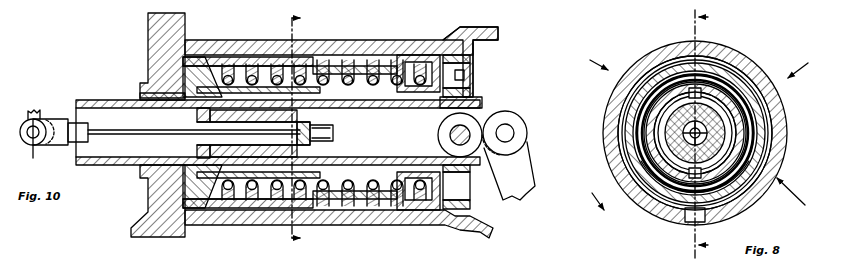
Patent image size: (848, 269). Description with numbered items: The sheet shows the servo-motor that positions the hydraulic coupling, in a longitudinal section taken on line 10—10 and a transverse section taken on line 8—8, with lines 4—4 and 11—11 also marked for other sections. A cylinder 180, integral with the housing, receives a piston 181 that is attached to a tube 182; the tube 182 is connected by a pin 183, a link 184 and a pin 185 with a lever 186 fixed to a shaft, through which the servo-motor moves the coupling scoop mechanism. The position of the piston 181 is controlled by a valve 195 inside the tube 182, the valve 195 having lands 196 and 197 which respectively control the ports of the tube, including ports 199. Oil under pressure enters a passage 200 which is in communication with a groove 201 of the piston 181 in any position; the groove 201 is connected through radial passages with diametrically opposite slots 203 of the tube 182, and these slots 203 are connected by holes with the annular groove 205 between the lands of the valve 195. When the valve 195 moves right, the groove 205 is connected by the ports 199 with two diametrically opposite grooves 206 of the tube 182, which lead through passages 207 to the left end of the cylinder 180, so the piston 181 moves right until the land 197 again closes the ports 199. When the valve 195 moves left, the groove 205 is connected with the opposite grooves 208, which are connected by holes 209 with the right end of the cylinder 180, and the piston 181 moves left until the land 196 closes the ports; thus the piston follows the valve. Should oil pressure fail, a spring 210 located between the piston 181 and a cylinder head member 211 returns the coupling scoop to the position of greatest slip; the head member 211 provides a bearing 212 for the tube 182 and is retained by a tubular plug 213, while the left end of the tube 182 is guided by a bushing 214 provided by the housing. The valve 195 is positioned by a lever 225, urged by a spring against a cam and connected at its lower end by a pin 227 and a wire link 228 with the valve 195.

In FIG. 10, the cylinder 180 is at (201, 226).
In FIG. 8, the cylinder 180 is at (668, 45).
In FIG. 10, the piston 181 is at (340, 55).
In FIG. 8, the piston 181 is at (735, 70).
In FIG. 10, the tube 182 is at (95, 100).
In FIG. 8, the tube 182 is at (745, 195).
In FIG. 10, the pin 183 is at (450, 134).
In FIG. 10, the link 184 is at (484, 104).
In FIG. 10, the pin 185 is at (514, 133).
In FIG. 10, the lever 186 is at (509, 191).
In FIG. 10, the valve 195 is at (324, 129).
In FIG. 8, the valve 195 is at (660, 68).
In FIG. 10, the land 196 is at (198, 148).
In FIG. 10, the land 197 is at (312, 142).
In FIG. 8, the land 197 is at (640, 140).
In FIG. 10, the ports 199 is at (302, 114).
In FIG. 8, the passage 200 is at (690, 222).
In FIG. 10, the groove 201 is at (204, 56).
In FIG. 8, the groove 201 is at (648, 160).
In FIG. 10, the slots 203 is at (418, 132).
In FIG. 8, the slots 203 is at (716, 52).
In FIG. 10, the annular groove 205 is at (204, 114).
In FIG. 10, the grooves 206 is at (243, 98).
In FIG. 8, the grooves 206 is at (640, 100).
In FIG. 10, the passages 207 is at (198, 80).
In FIG. 8, the grooves 208 is at (742, 114).
In FIG. 8, the holes 209 is at (752, 130).
In FIG. 10, the spring 210 is at (471, 70).
In FIG. 8, the spring 210 is at (760, 92).
In FIG. 10, the cylinder head member 211 is at (471, 58).
In FIG. 10, the bearing 212 is at (471, 90).
In FIG. 10, the tubular plug 213 is at (478, 58).
In FIG. 10, the bushing 214 is at (145, 97).
In FIG. 10, the lever 225 is at (40, 110).
In FIG. 10, the pin 227 is at (30, 161).
In FIG. 10, the wire link 228 is at (124, 133).
In FIG. 8, the wire link 228 is at (652, 205).
In FIG. 10, the section line 8— 8 is at (301, 130).
In FIG. 8, the section line 4— 4 is at (706, 134).
In FIG. 8, the section line 10— 10 is at (697, 122).
In FIG. 8, the section line 11— 11 is at (700, 146).